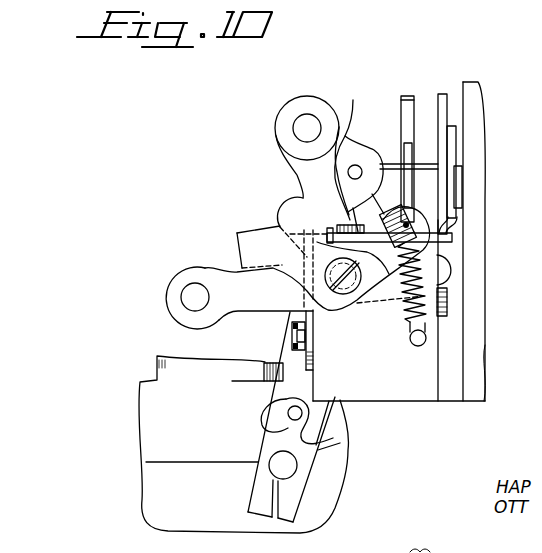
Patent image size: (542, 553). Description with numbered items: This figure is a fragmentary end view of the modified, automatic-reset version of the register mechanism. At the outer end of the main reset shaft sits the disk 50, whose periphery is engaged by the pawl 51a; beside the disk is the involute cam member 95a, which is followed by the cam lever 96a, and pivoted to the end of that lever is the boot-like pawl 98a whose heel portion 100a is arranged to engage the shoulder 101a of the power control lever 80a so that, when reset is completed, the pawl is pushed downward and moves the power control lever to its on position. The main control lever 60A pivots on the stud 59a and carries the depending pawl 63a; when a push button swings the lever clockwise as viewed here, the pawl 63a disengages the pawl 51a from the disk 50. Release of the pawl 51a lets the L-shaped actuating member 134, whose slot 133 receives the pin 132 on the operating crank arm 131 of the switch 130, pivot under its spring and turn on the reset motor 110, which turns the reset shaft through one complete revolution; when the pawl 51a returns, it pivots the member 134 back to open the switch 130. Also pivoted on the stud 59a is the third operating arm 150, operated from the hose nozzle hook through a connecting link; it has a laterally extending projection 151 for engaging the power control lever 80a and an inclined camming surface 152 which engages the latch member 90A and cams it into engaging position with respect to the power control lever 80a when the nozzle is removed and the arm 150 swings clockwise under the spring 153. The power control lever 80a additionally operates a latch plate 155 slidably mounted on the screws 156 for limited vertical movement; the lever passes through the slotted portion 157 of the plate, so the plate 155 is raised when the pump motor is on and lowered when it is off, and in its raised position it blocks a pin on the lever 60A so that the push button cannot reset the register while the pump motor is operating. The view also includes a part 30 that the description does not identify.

The frame plate 30 is at (483, 104).
The third operating arm 150 is at (277, 137).
The main control lever 60A is at (358, 94).
The disk 50 is at (403, 97).
The pawl 51a is at (405, 141).
The depending pawl 63a is at (411, 147).
The cam lever 96a is at (439, 94).
The involute cam member 95a is at (450, 125).
The boot-like pawl 98a is at (461, 221).
The shoulder 101a is at (453, 257).
The heel portion 100a is at (437, 302).
The inclined camming surface 152 is at (384, 259).
The power control lever 80a is at (179, 274).
The latch member 90A is at (303, 198).
The laterally extending projection 151 is at (236, 246).
The slotted portion 157 is at (276, 226).
The spring 153 is at (405, 302).
The stud 59a is at (374, 332).
The screws 156 is at (293, 328).
The plate 155 is at (300, 364).
The reset motor 110 is at (152, 486).
The L-shaped actuating member 134 is at (282, 389).
The operating crank arm 131 is at (320, 449).
The switch 130 is at (298, 472).
The slot 133 is at (274, 404).
The pin 132 is at (290, 420).